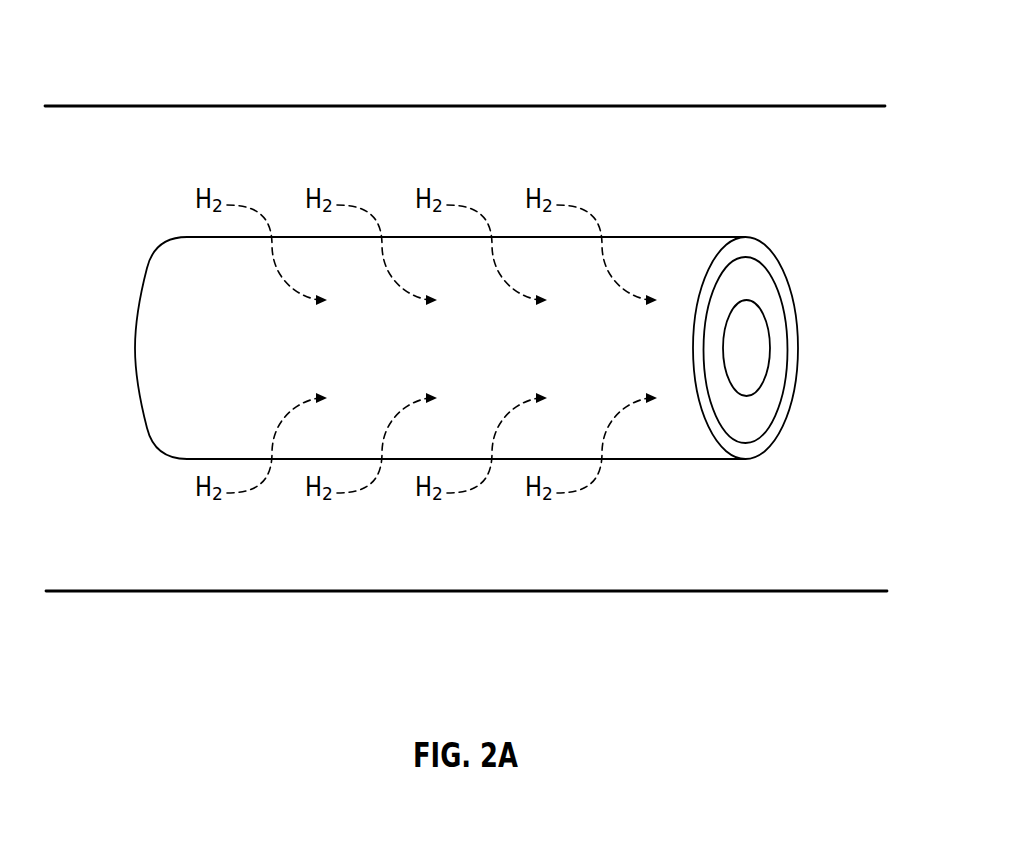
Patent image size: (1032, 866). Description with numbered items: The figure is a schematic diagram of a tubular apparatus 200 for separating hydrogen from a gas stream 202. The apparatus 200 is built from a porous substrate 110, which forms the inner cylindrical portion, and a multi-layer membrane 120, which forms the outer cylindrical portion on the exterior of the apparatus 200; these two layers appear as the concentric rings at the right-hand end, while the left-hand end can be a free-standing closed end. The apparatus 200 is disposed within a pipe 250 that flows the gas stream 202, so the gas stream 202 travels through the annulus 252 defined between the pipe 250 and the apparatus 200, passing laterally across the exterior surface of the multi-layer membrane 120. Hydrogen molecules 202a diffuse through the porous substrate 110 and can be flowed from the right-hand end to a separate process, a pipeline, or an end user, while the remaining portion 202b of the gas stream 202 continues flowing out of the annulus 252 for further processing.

The apparatus 200 is at (501, 442).
The porous substrate 110 is at (782, 298).
The multi-layer membrane 120 is at (778, 258).
The pipe 250 is at (567, 104).
The annulus 252 is at (665, 155).
The gas stream 202 is at (153, 179).
The hydrogen molecules 202a is at (747, 348).
The remaining portion of the gas stream 202b is at (775, 179).